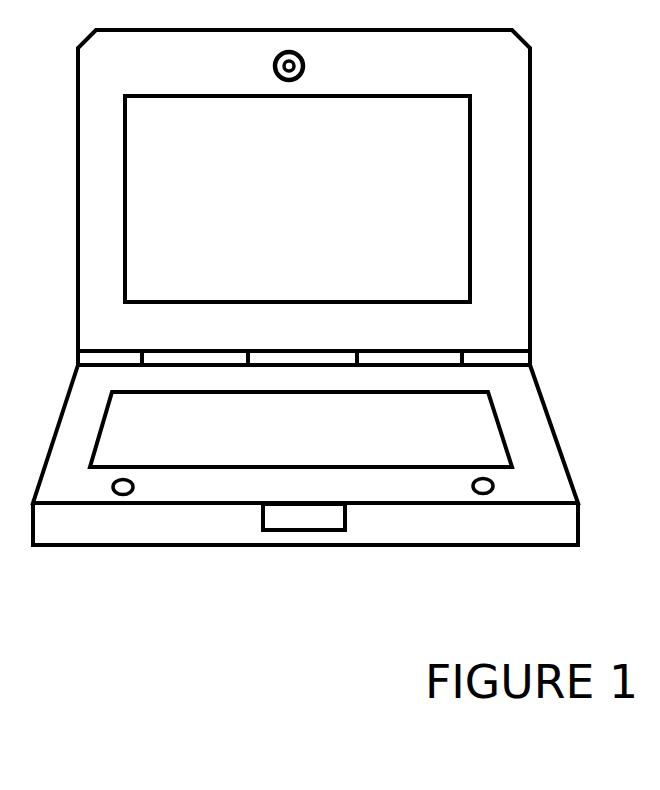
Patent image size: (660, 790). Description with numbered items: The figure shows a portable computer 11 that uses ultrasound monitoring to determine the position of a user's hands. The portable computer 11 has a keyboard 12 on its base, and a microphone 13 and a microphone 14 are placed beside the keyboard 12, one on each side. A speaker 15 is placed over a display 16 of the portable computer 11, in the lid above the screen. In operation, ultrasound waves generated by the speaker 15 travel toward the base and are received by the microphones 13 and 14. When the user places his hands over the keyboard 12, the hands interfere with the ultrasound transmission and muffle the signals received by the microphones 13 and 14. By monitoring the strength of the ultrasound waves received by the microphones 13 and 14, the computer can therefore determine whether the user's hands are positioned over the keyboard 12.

The portable computer 11 is at (330, 547).
The keyboard 12 is at (411, 468).
The microphone 13 is at (121, 495).
The microphone 14 is at (489, 494).
The speaker 15 is at (296, 80).
The display 16 is at (452, 93).